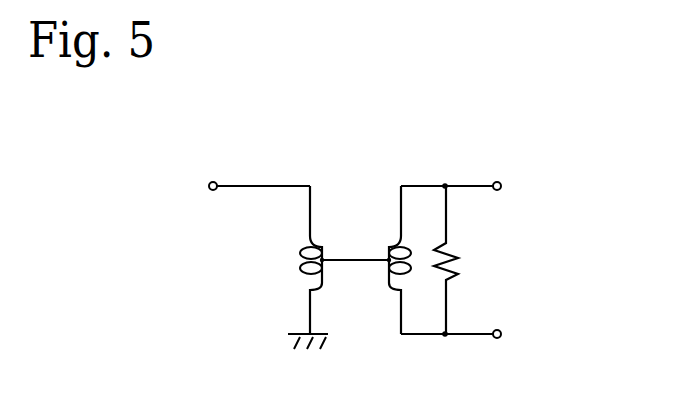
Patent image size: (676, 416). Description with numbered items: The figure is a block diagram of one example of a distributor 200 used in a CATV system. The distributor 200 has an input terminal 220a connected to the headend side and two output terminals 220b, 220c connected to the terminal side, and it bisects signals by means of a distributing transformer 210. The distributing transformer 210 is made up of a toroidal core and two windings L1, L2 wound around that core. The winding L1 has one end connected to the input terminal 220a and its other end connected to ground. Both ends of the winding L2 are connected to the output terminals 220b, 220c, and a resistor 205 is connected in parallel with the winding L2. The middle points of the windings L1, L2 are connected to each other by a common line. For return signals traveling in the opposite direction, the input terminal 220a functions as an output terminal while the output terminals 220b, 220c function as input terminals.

The distributor 200 is at (483, 122).
The resistor 205 is at (460, 254).
The distributing transformer 210 is at (356, 238).
The input terminal 220a is at (210, 182).
The output terminal 220b is at (502, 185).
The output terminal 220c is at (502, 333).
The winding L1 is at (301, 273).
The winding L2 is at (393, 275).